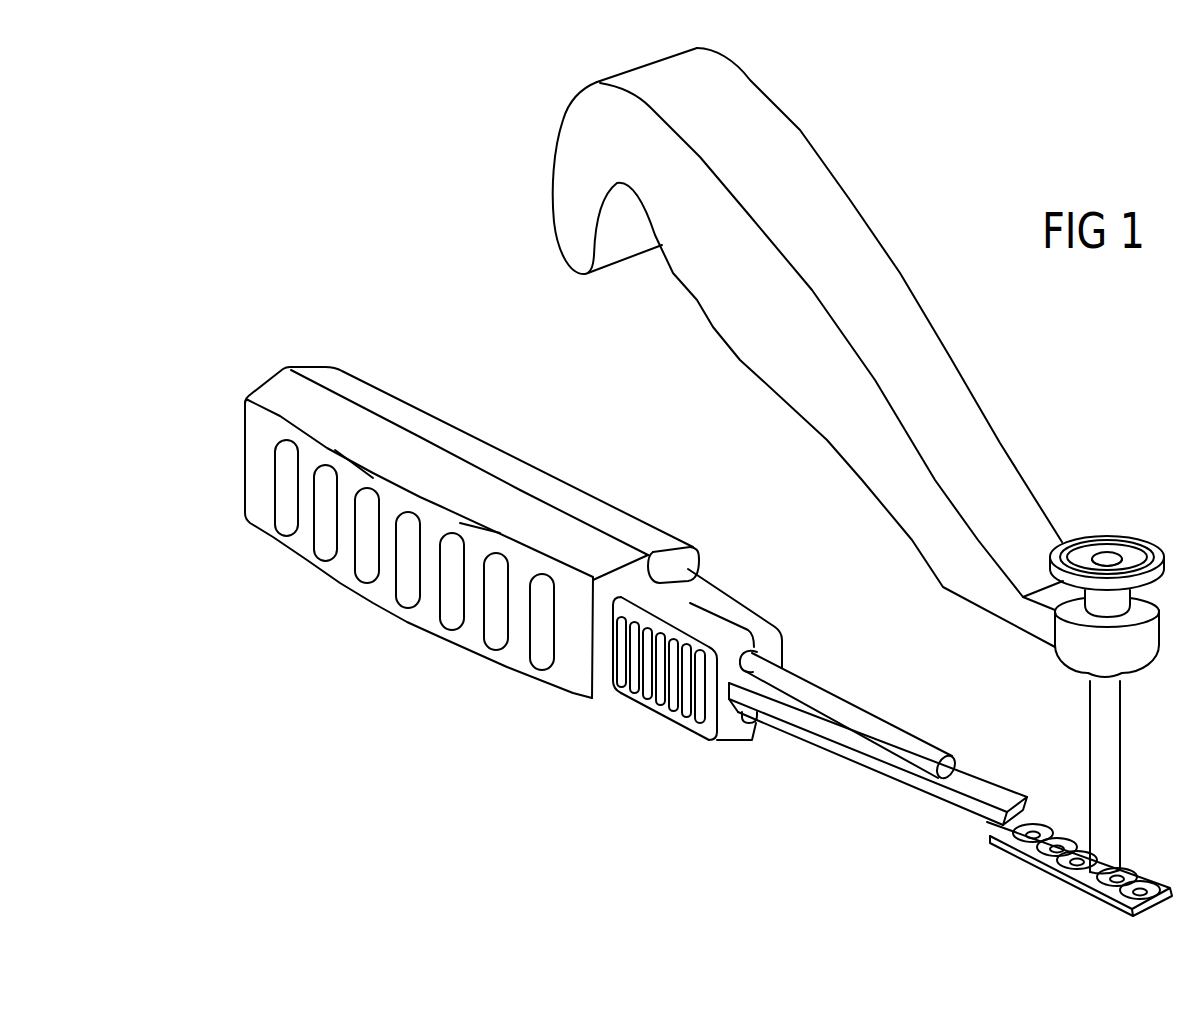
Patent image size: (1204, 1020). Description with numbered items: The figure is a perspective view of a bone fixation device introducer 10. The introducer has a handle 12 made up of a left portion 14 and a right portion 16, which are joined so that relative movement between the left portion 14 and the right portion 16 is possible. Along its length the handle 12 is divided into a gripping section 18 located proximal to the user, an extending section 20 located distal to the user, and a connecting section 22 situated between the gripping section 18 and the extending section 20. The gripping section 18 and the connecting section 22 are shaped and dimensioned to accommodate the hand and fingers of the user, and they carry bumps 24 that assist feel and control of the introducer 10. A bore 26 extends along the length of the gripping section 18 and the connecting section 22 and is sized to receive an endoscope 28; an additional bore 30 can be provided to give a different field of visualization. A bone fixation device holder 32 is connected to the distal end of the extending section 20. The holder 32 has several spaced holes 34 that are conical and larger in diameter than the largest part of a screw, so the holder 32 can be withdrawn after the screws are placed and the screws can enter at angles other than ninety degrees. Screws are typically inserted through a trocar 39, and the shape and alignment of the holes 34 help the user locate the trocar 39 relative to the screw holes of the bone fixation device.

The bone fixation device introducer 10 is at (726, 756).
The handle 12 is at (274, 325).
The left portion 14 is at (378, 372).
The right portion 16 is at (292, 402).
The gripping section 18 is at (387, 577).
The extending section 20 is at (872, 767).
The connecting section 22 is at (665, 712).
The bumps 24 is at (620, 666).
The bore 26 is at (750, 657).
The endoscope 28 is at (870, 697).
The bore 30 is at (753, 724).
The bone fixation device holder 32 is at (1022, 848).
The holes 34 is at (1067, 840).
The trocar 39 is at (1110, 752).